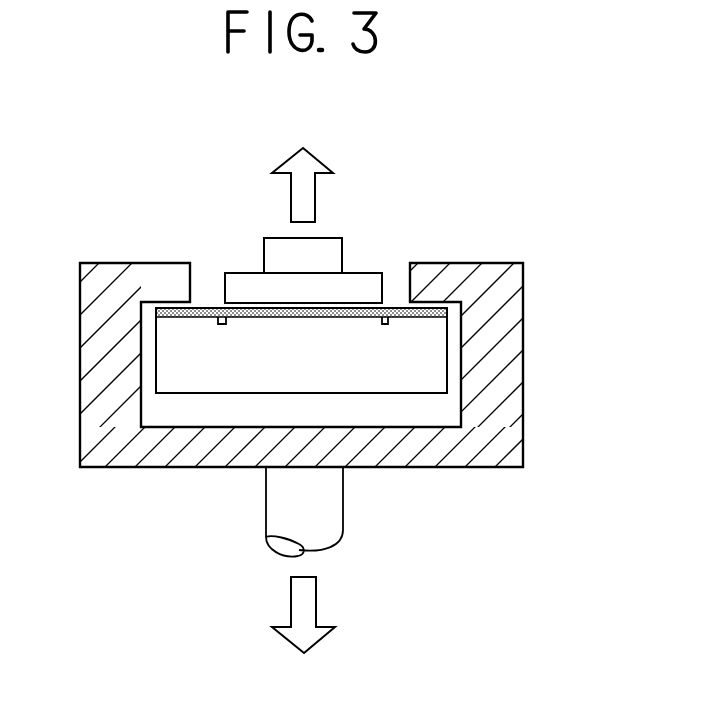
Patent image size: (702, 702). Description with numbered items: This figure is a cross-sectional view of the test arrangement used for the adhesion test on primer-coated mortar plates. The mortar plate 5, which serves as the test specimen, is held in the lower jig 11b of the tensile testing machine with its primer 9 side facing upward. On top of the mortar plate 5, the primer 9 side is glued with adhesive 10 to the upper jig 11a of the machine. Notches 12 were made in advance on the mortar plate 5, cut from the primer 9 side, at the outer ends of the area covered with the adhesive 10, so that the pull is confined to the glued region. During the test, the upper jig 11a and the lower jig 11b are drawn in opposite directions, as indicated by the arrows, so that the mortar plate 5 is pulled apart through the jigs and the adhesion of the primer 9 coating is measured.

The mortar plate 5 is at (432, 343).
The primer 9 is at (427, 310).
The adhesive 10 is at (362, 303).
The upper jig 11a is at (266, 268).
The lower jig 11b is at (427, 457).
The notches 12 is at (222, 305).